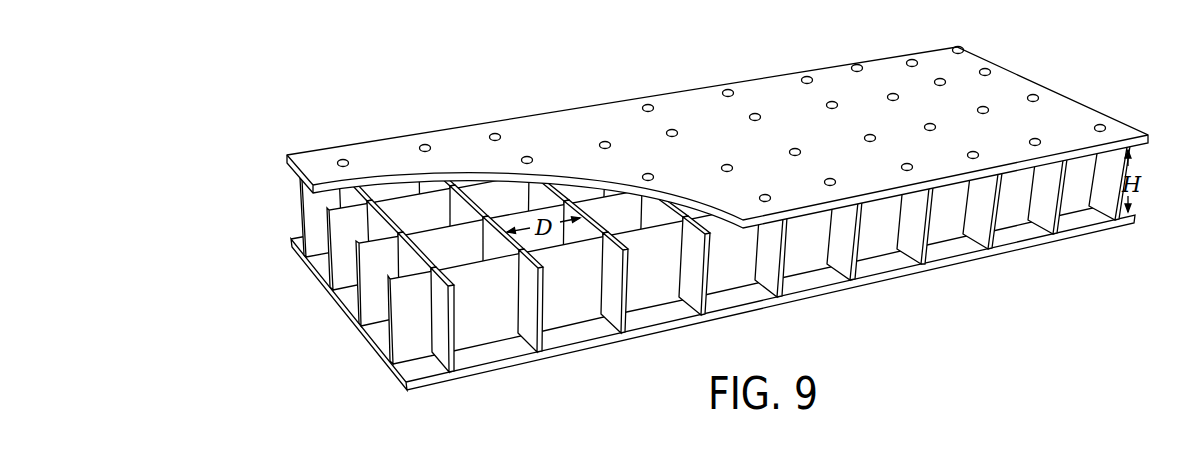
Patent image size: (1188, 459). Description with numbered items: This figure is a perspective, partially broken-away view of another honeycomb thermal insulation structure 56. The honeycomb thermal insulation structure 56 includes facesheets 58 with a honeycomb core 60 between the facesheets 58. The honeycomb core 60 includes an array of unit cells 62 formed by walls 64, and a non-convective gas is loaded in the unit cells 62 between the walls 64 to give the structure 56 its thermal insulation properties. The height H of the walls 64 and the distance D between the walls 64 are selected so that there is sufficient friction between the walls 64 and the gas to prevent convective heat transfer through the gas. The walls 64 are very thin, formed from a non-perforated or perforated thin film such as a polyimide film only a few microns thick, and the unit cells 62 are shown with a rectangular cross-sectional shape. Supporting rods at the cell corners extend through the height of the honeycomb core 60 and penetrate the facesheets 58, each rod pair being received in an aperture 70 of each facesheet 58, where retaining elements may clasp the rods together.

The honeycomb thermal insulation structure 56 is at (660, 223).
The facesheets 58 is at (717, 152).
The honeycomb core 60 is at (651, 260).
The unit cells 62 is at (460, 248).
The walls 64 is at (482, 303).
The aperture 70 is at (985, 69).